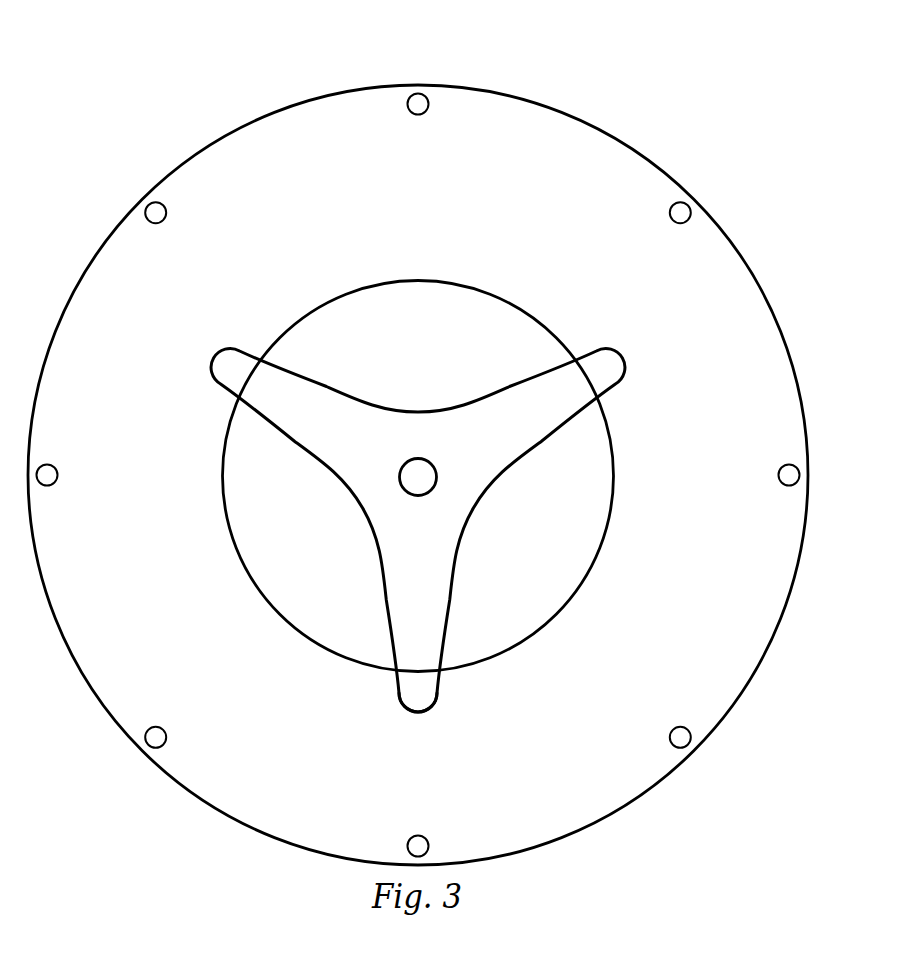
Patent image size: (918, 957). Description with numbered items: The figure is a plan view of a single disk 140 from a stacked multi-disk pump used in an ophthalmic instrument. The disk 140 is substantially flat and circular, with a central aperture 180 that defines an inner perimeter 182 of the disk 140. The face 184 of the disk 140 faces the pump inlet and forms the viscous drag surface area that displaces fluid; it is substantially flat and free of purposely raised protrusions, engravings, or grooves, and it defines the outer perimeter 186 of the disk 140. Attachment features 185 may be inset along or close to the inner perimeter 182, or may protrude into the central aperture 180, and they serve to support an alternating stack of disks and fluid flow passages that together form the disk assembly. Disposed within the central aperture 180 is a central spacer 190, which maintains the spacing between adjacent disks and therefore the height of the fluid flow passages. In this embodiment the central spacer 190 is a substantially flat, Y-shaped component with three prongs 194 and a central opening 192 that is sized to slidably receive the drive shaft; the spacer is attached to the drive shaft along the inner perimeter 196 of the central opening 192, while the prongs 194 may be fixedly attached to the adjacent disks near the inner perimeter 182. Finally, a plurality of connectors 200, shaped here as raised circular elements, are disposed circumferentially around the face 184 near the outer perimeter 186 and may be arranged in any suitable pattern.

The disk 140 is at (524, 75).
The central aperture 180 is at (433, 458).
The inner perimeter 182 is at (587, 572).
The face 184 is at (285, 272).
The attachment features 185 is at (418, 713).
The outer perimeter 186 is at (739, 250).
The central spacer 190 is at (452, 550).
The central opening 192 is at (420, 504).
The prongs 194 is at (312, 388).
The inner perimeter of the central opening 196 is at (428, 486).
The connectors 200 is at (147, 207).